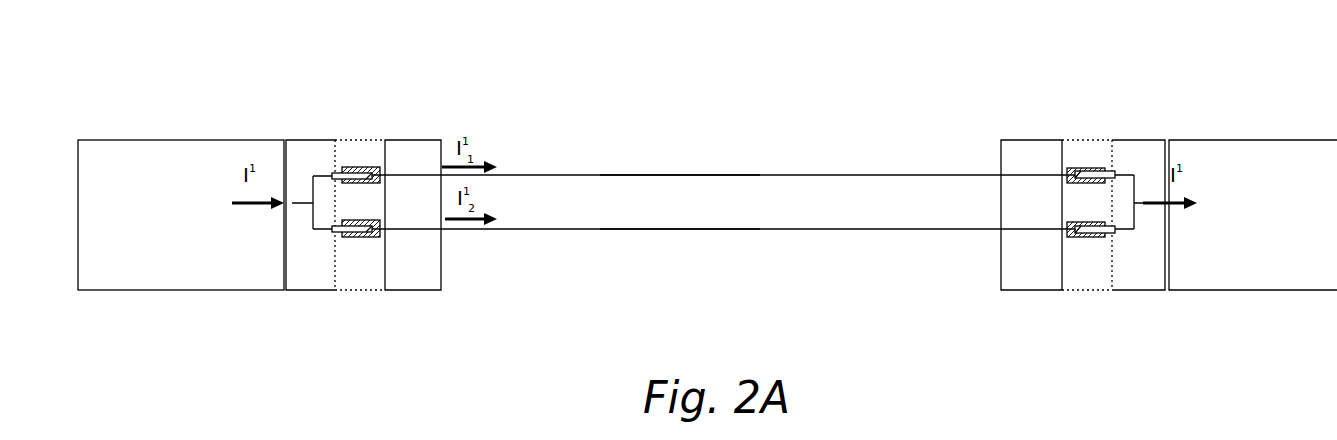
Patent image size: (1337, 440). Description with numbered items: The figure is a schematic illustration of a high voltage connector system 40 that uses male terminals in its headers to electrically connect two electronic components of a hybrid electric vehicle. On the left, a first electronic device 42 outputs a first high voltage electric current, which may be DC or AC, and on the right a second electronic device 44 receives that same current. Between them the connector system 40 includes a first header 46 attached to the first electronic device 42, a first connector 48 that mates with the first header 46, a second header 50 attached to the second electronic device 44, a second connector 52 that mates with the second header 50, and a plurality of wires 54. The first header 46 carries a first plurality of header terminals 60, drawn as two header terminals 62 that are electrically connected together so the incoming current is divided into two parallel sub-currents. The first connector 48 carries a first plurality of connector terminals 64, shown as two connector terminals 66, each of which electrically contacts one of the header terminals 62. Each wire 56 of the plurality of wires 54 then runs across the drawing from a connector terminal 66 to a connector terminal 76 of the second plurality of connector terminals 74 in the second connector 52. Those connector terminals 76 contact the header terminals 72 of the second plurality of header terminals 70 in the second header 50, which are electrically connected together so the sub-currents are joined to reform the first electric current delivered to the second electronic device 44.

The high voltage connector system 40 is at (812, 78).
The first electronic device 42 is at (195, 142).
The second electronic device 44 is at (1275, 140).
The first header 46 is at (313, 140).
The first connector 48 is at (420, 142).
The second header 50 is at (1138, 142).
The second connector 52 is at (1050, 142).
The plurality of wires 54 is at (712, 248).
The wire 56 is at (620, 310).
The first plurality of header terminals 60 is at (314, 273).
The header terminal 62 is at (313, 247).
The first plurality of connector terminals 64 is at (365, 254).
The connector terminal 66 is at (380, 182).
The second plurality of header terminals 70 is at (1120, 256).
The header terminal 72 is at (1113, 173).
The second plurality of connector terminals 74 is at (1093, 252).
The connector terminal 76 is at (1067, 238).